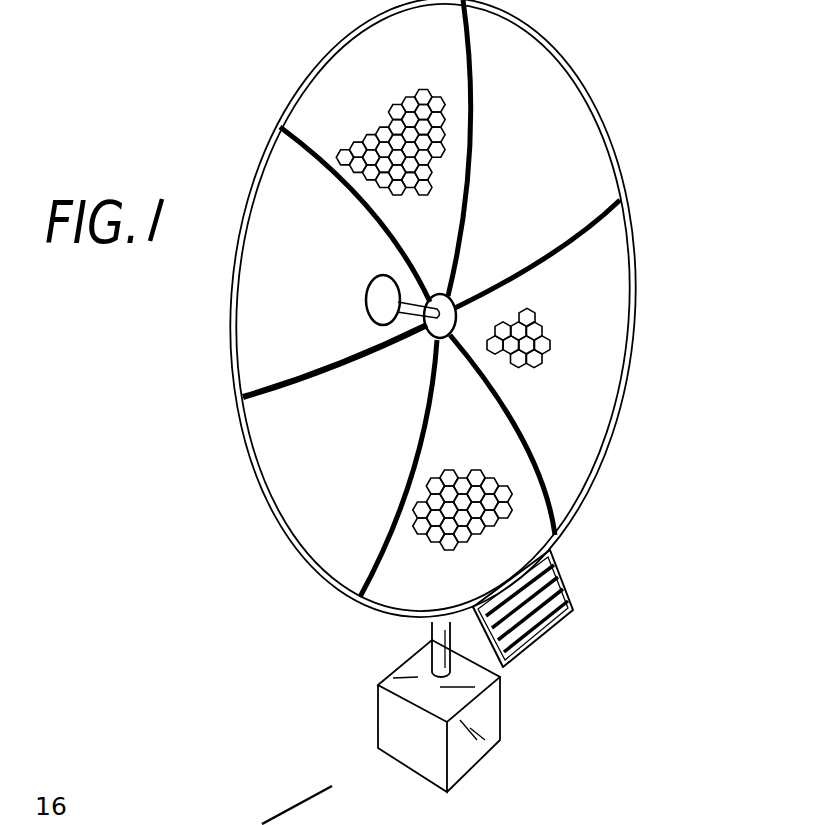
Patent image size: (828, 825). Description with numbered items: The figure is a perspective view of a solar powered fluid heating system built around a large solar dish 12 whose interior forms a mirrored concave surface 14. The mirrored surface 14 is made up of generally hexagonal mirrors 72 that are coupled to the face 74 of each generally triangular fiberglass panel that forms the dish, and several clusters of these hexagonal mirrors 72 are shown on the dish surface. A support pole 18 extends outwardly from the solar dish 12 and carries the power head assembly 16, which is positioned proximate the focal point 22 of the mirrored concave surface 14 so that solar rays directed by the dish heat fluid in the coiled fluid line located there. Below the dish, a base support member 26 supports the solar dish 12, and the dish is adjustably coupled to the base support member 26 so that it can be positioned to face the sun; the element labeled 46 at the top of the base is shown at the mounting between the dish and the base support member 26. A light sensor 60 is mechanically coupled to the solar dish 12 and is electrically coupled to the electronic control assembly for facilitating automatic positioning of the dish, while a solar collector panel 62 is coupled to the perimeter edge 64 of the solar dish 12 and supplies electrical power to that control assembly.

The solar dish 12 is at (605, 312).
The mirrored concave surface 14 is at (380, 118).
The power head assembly 16 is at (364, 294).
The support pole 18 is at (432, 624).
The focal point 22 is at (243, 407).
The base support member 26 is at (467, 757).
The mounting plate 46 is at (378, 685).
The light sensor 60 is at (560, 573).
The solar collector panel 62 is at (560, 627).
The perimeter edge 64 is at (617, 142).
The hexagonal mirrors 72 is at (553, 350).
The face 74 is at (453, 403).